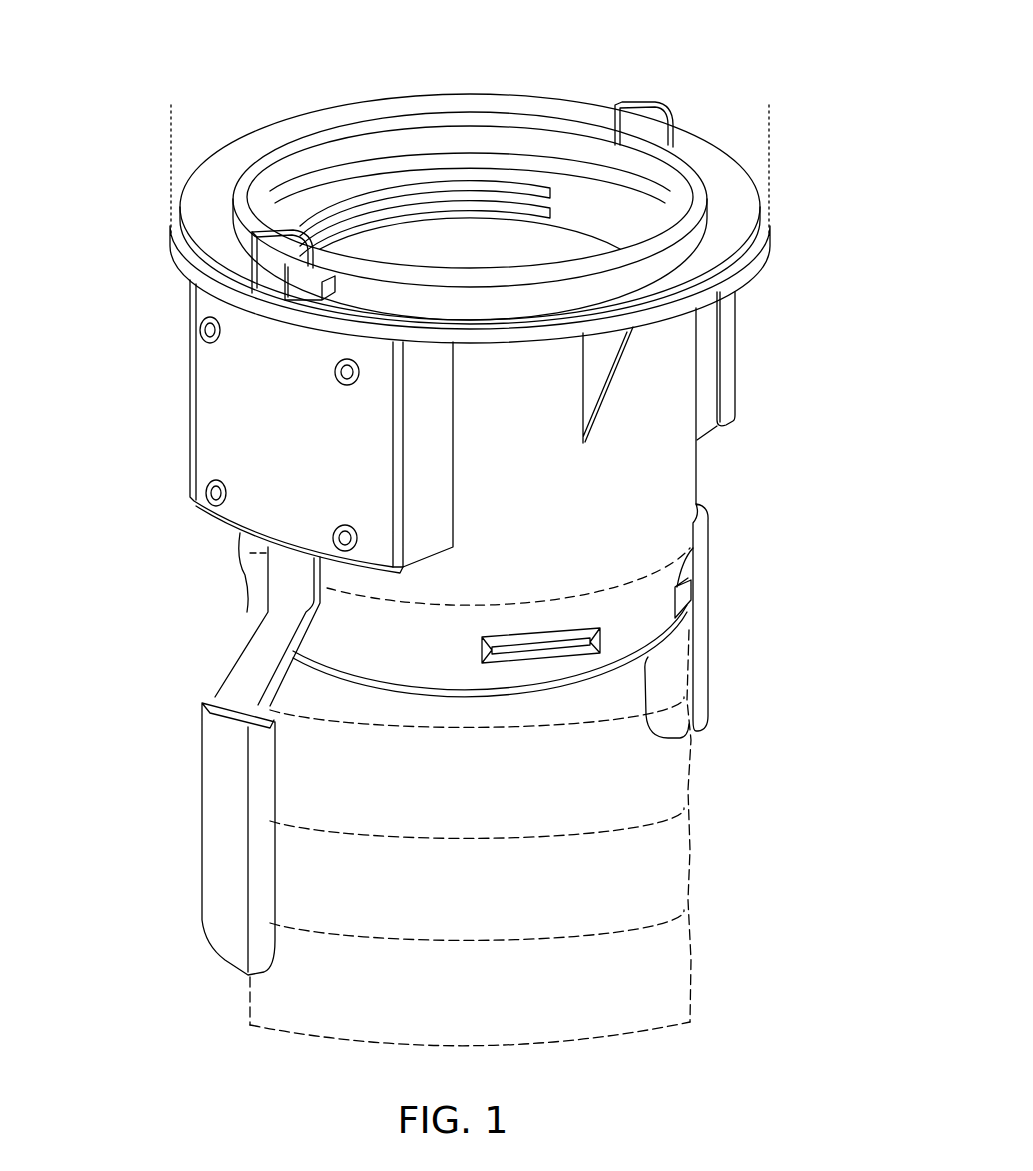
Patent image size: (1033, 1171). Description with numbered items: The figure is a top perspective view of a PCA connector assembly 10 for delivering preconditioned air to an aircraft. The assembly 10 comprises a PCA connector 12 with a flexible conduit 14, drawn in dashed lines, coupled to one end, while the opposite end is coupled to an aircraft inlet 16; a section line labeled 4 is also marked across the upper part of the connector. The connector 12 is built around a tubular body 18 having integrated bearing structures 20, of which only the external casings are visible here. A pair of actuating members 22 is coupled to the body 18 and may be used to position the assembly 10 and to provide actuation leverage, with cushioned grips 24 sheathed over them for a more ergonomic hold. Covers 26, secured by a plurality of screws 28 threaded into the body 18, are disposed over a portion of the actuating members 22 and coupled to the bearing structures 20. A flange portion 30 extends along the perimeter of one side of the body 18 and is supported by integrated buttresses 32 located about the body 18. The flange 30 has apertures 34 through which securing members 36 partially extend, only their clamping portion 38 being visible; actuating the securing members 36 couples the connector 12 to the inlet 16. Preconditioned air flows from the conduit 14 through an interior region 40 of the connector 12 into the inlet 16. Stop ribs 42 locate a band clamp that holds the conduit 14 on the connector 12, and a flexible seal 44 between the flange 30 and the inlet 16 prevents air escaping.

The section line 4- 4 is at (613, 47).
The PCA connector assembly 10 is at (765, 76).
The PCA connector 12 is at (805, 478).
The flexible conduit 14 is at (693, 770).
The aircraft inlet 16 is at (770, 158).
The tubular body 18 is at (687, 477).
The integrated bearing structures 20 is at (440, 463).
The actuating members 22 is at (227, 677).
The cushioned grips 24 is at (213, 843).
The covers 26 is at (215, 410).
The screws 28 is at (347, 387).
The flange portion 30 is at (770, 252).
The integrated buttresses 32 is at (593, 397).
The apertures 34 is at (300, 291).
The securing members 36 is at (250, 253).
The clamping portion 38 is at (305, 268).
The interior region 40 is at (478, 232).
The stop ribs 42 is at (482, 652).
The flexible seal 44 is at (258, 147).